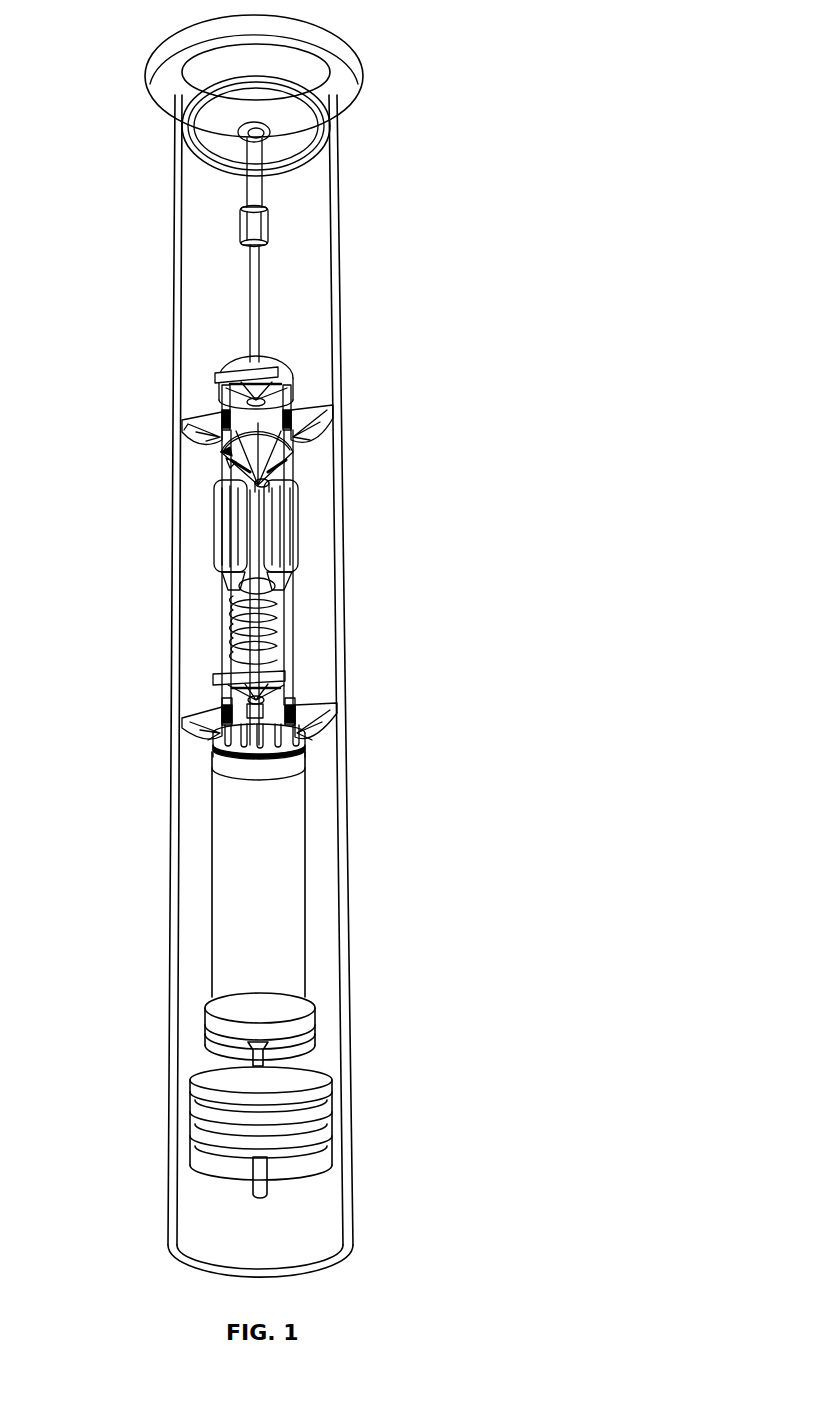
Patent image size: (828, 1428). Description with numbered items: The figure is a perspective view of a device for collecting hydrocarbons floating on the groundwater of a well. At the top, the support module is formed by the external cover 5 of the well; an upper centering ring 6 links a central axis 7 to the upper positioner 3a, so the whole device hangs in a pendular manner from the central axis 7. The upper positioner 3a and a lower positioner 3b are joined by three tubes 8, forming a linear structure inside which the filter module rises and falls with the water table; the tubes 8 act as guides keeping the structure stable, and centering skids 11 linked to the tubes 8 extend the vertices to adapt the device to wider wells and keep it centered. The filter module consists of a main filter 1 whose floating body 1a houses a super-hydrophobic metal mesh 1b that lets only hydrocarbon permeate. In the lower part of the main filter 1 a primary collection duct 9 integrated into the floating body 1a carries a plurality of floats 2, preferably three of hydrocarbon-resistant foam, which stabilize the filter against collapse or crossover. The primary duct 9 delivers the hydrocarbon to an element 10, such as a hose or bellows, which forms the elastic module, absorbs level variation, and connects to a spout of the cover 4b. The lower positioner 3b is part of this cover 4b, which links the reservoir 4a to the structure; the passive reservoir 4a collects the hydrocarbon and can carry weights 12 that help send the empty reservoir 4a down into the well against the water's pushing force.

The main filter 1 is at (302, 457).
The floating body 1a is at (223, 452).
The metal mesh 1b is at (230, 460).
The floats 2 is at (225, 520).
The upper positioner 3a is at (313, 392).
The lower positioner 3b is at (207, 697).
The reservoir 4a is at (305, 855).
The cover 4b is at (305, 745).
The external cover 5 is at (298, 62).
The upper centering ring 6 is at (270, 131).
The central axis 7 is at (273, 260).
The tubes 8 is at (295, 602).
The primary collection duct 9 is at (270, 482).
The element 10 is at (238, 650).
The centering skids 11 is at (187, 420).
The weights 12 is at (320, 1083).